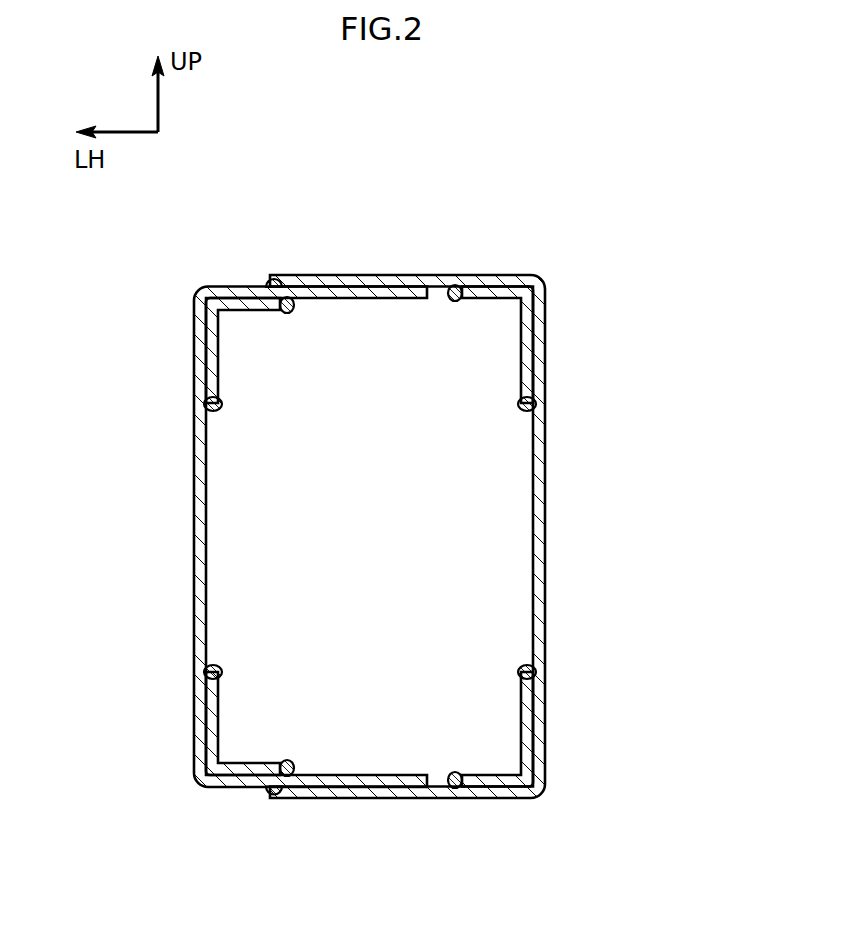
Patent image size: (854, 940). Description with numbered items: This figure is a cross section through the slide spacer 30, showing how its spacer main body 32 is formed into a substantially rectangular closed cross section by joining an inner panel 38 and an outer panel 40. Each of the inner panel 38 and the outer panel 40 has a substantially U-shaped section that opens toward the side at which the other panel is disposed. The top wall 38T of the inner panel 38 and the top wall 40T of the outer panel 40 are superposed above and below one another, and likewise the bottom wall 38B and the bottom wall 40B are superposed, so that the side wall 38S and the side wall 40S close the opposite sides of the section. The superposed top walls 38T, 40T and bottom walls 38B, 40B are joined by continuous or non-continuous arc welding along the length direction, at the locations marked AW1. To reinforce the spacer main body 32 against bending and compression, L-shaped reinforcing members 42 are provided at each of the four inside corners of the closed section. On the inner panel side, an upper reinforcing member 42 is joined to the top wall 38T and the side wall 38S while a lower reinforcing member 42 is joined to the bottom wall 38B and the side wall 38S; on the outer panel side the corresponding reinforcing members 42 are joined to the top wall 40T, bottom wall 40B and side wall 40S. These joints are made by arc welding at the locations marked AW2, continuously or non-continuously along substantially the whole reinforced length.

The slide spacer 30 is at (376, 512).
The spacer main body 32 is at (589, 245).
The inner panel 38 is at (547, 546).
The top wall 38T is at (407, 275).
The side wall 38S is at (540, 477).
The bottom wall 38B is at (440, 796).
The outer panel 40 is at (200, 523).
The top wall 40T is at (357, 290).
The side wall 40S is at (195, 615).
The bottom wall 40B is at (372, 790).
The reinforcing member 42 is at (213, 361).
The arc welding location AW1 is at (266, 273).
The arc welding location AW2 is at (452, 314).